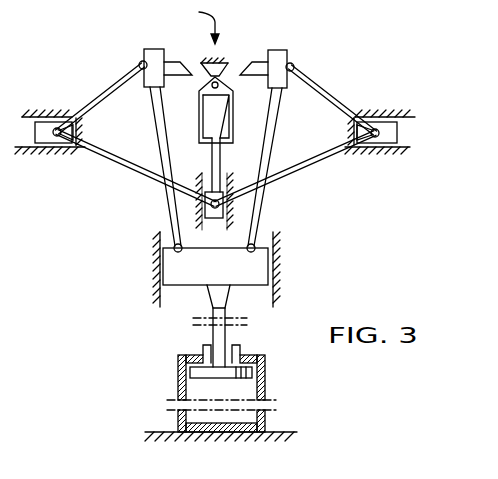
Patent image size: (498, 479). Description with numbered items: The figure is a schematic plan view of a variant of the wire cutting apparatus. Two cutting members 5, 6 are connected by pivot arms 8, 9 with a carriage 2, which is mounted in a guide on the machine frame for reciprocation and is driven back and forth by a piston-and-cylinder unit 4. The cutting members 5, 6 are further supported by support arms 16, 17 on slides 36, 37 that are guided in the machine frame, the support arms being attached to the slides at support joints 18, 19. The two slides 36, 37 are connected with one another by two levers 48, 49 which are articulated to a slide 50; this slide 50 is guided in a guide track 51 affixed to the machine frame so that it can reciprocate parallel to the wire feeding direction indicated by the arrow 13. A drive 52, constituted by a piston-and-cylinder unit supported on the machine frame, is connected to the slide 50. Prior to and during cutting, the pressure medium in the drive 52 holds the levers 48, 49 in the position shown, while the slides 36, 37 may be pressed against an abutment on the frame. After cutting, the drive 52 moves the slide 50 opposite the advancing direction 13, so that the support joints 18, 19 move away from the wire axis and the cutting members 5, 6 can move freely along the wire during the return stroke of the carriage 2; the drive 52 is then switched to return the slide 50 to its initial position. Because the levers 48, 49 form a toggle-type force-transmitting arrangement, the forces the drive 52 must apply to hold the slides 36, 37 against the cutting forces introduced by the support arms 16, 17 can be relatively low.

The carriage 2 is at (258, 282).
The piston-and-cylinder unit 4 is at (267, 382).
The cutting member 5 is at (155, 49).
The cutting member 6 is at (276, 50).
The pivot arm 8 is at (167, 153).
The pivot arm 9 is at (262, 153).
The arrow 13 is at (198, 22).
The support arm 16 is at (117, 82).
The support arm 17 is at (317, 80).
The support joint 18 is at (58, 128).
The support joint 19 is at (365, 118).
The slide 36 is at (40, 115).
The slide 37 is at (392, 118).
The lever 48 is at (118, 160).
The lever 49 is at (319, 162).
The slide 50 is at (216, 269).
The guide track 51 is at (232, 223).
The drive 52 is at (234, 122).